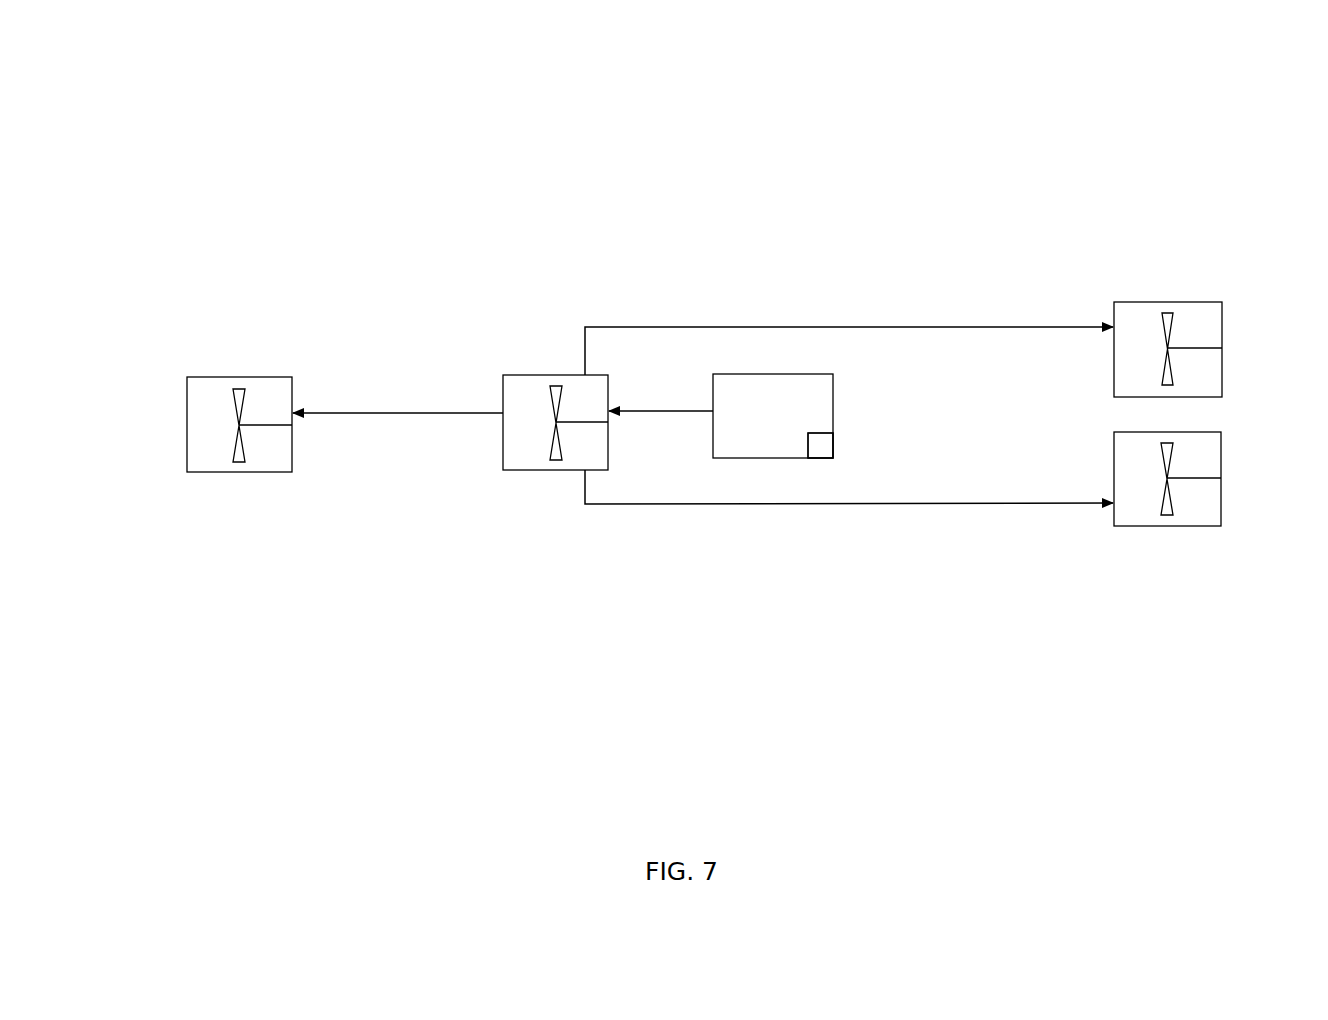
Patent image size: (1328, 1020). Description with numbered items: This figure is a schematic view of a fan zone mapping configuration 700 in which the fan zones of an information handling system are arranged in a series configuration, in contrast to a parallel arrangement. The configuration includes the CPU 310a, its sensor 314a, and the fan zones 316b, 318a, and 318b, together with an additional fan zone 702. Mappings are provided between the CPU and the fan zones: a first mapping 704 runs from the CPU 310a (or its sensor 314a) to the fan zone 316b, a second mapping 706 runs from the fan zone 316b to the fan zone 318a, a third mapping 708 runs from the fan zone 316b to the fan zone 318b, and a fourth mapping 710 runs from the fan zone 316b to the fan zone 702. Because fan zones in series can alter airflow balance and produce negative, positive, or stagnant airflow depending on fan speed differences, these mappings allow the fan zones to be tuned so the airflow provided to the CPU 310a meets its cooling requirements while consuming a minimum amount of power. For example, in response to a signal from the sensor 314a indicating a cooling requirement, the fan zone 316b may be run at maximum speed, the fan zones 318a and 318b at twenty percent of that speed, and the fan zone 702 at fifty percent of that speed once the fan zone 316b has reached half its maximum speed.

The fan zone mapping configuration 700 is at (1240, 101).
The fan zone 702 is at (187, 425).
The first mapping 704 is at (645, 408).
The second mapping 706 is at (798, 327).
The third mapping 708 is at (808, 504).
The fourth mapping 710 is at (397, 410).
The CPU 310a is at (799, 444).
The sensor 314a is at (833, 430).
The fan zone 316b is at (503, 435).
The fan zone 318a is at (1222, 322).
The fan zone 318b is at (1221, 453).